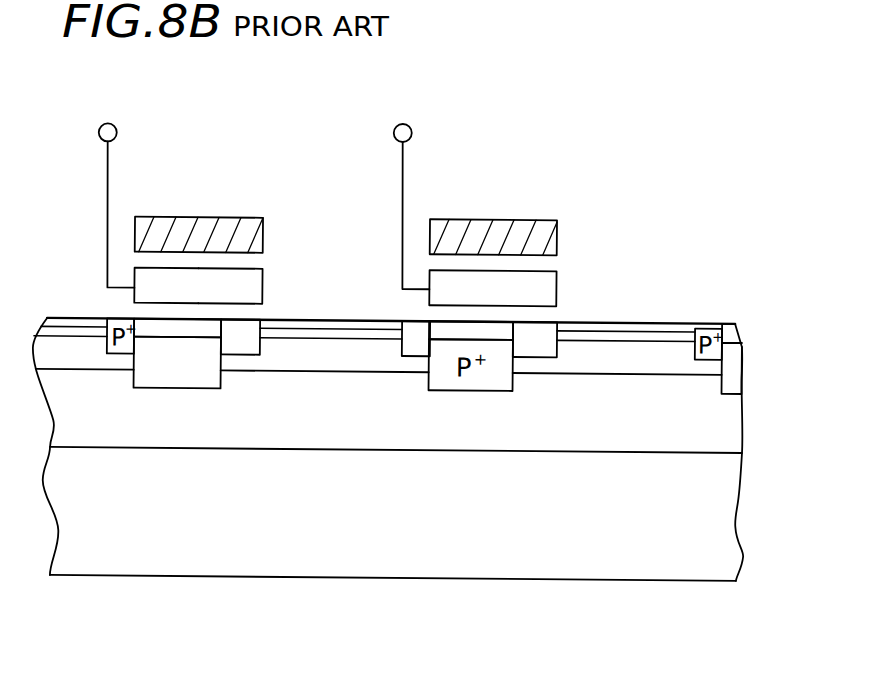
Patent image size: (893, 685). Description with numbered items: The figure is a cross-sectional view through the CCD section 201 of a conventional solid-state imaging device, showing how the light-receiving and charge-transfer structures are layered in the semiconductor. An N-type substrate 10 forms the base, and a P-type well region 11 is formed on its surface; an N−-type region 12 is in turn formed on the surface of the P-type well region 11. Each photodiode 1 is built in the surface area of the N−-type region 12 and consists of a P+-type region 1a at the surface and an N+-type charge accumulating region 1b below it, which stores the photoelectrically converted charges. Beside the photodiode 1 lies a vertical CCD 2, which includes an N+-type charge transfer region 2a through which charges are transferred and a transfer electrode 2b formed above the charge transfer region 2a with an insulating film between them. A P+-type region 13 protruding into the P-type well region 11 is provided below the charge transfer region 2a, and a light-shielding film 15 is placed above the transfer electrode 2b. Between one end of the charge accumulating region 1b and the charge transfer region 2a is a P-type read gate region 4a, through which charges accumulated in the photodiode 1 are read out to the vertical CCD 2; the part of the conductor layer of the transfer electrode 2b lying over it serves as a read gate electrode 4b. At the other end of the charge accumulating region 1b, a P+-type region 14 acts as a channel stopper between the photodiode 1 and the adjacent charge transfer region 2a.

The CCD section 201 is at (774, 585).
The N-type substrate 10 is at (724, 529).
The P-type well region 11 is at (723, 424).
The N−-type region 12 is at (677, 352).
The photodiode 1 is at (385, 254).
The P+-type region 1a is at (329, 322).
The N+-type charge accumulating region 1b is at (360, 332).
The vertical CCD 2 is at (346, 175).
The N+-type charge transfer region 2a is at (242, 297).
The transfer electrode 2b is at (175, 294).
The P-type read gate region 4a is at (253, 329).
The read gate electrode 4b is at (245, 233).
The P+-type region 13 is at (187, 375).
The P+-type region 14 is at (415, 357).
The light-shielding film 15 is at (141, 220).